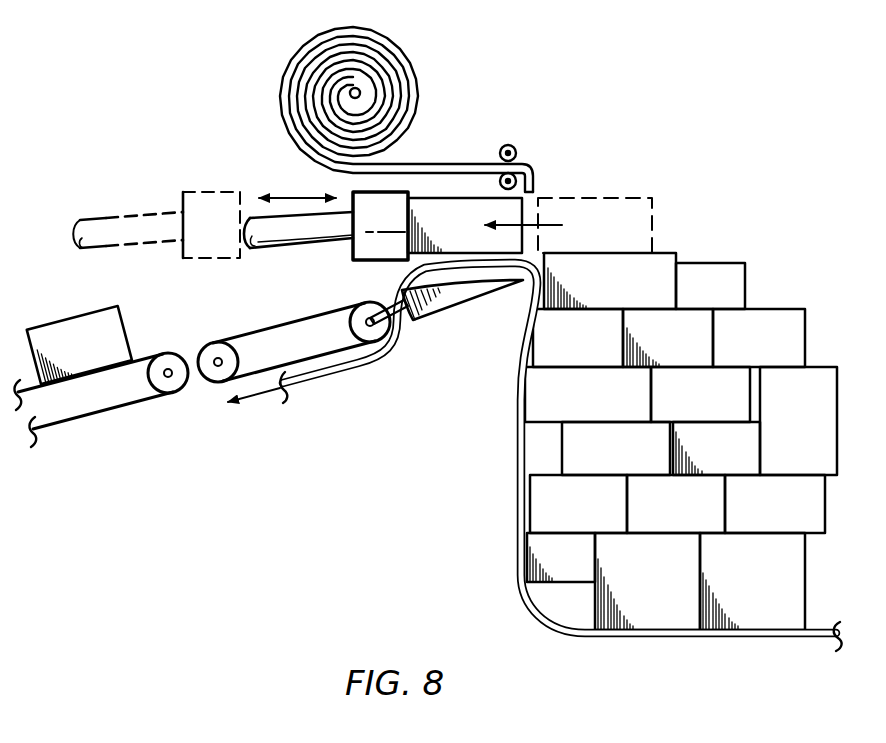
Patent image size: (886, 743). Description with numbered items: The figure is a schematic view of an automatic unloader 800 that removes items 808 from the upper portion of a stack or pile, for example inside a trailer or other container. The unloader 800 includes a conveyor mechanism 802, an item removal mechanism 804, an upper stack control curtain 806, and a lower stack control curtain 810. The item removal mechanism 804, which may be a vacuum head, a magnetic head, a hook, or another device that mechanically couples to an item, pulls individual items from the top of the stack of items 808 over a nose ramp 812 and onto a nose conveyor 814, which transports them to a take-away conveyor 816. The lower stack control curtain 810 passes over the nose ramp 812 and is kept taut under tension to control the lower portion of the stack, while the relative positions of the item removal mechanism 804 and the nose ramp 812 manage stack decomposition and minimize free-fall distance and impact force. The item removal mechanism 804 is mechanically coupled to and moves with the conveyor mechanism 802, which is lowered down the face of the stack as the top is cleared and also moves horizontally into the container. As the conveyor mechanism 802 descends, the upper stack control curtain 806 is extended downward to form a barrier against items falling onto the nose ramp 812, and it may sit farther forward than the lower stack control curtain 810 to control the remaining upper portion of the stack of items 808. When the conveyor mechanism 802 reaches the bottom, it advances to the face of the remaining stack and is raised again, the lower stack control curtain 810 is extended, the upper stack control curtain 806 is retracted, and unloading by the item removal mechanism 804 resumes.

The automatic unloader 800 is at (203, 78).
The conveyor mechanism 802 is at (200, 402).
The item removal mechanism 804 is at (372, 262).
The upper stack control curtain 806 is at (461, 160).
The items 808 is at (694, 230).
The lower stack control curtain 810 is at (516, 468).
The nose ramp 812 is at (454, 312).
The nose conveyor 814 is at (258, 330).
The take-away conveyor 816 is at (71, 427).